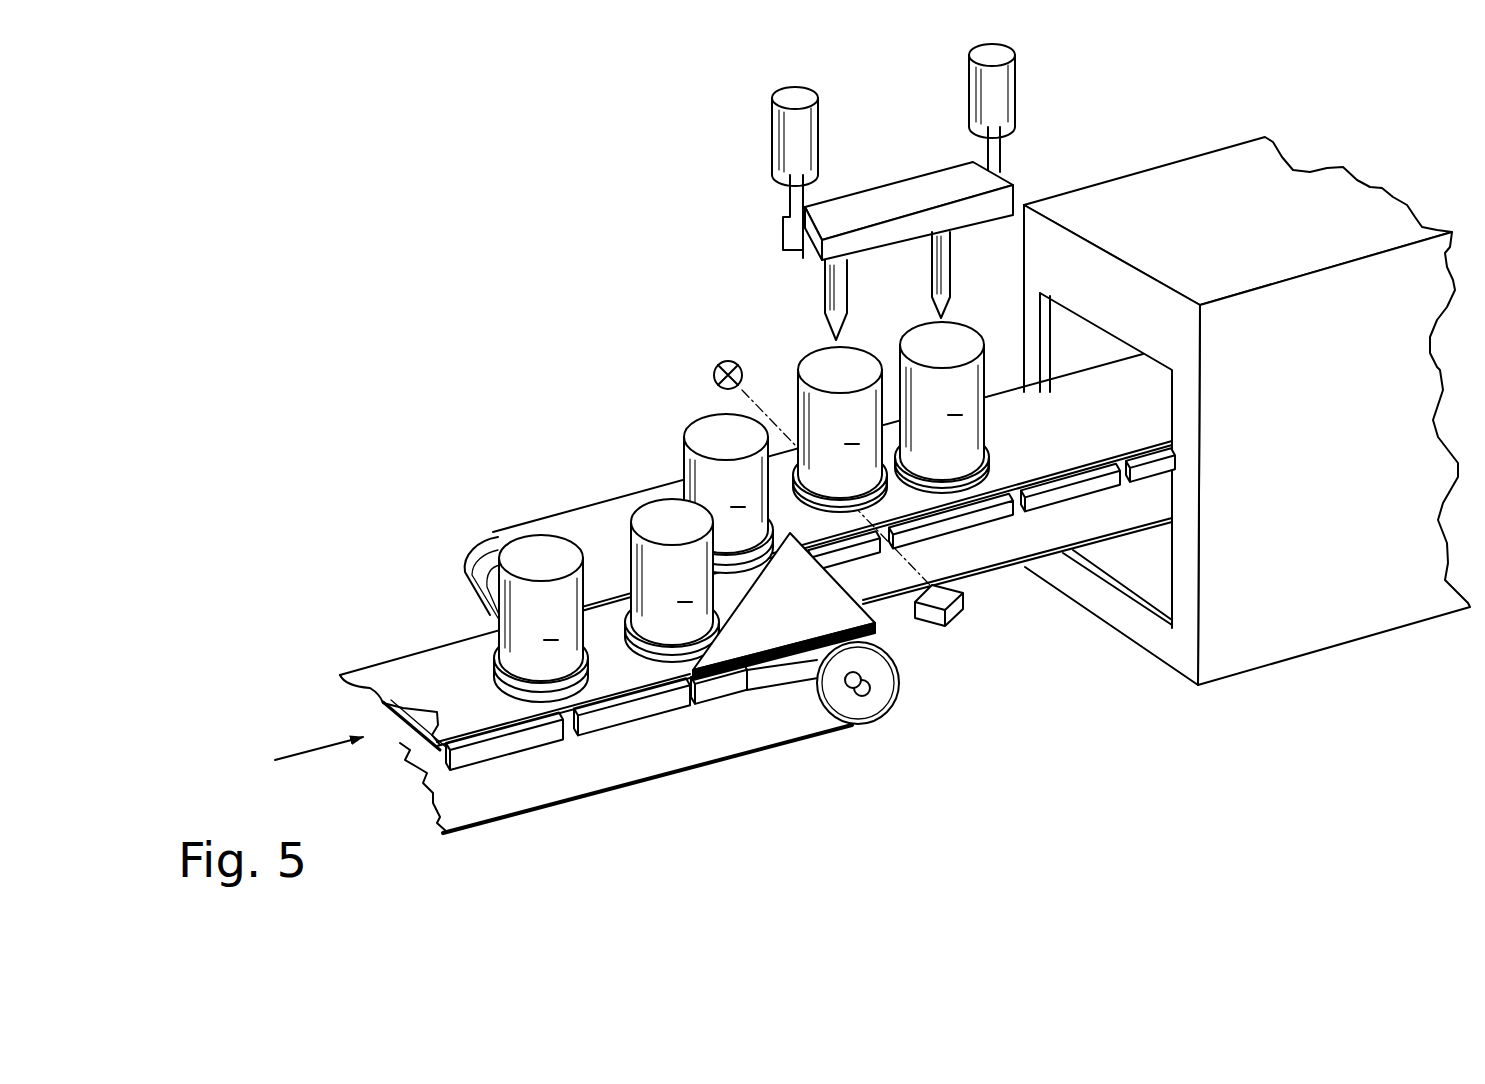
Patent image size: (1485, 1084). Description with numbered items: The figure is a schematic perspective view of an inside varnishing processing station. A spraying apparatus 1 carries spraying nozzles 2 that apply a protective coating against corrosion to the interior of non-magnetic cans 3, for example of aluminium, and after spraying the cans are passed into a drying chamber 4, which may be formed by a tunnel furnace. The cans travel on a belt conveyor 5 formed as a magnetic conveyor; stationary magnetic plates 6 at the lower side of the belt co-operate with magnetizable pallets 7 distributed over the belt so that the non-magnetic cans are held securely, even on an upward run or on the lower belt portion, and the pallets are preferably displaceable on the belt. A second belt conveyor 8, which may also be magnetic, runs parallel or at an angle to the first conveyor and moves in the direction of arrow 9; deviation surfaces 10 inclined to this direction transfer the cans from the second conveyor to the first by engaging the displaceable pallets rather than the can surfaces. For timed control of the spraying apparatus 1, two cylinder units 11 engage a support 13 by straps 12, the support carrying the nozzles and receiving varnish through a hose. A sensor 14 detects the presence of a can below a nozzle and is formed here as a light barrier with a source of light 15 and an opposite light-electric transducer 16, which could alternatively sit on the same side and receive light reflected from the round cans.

The spraying apparatus 1 is at (692, 160).
The spraying nozzles 2 is at (822, 297).
The cans 3 is at (741, 512).
The drying chamber 4 is at (1305, 145).
The belt conveyor 5 is at (595, 525).
The magnetic plates 6 is at (503, 752).
The magnetizable pallets 7 is at (488, 655).
The second belt conveyor 8 is at (440, 668).
The direction of movement arrow 9 is at (322, 752).
The deviation surfaces 10 is at (832, 608).
The cylinder units 11 is at (818, 105).
The straps 12 is at (998, 150).
The support 13 is at (880, 205).
The sensor 14 is at (982, 658).
The source of light 15 is at (712, 362).
The light-electric transducer 16 is at (967, 603).